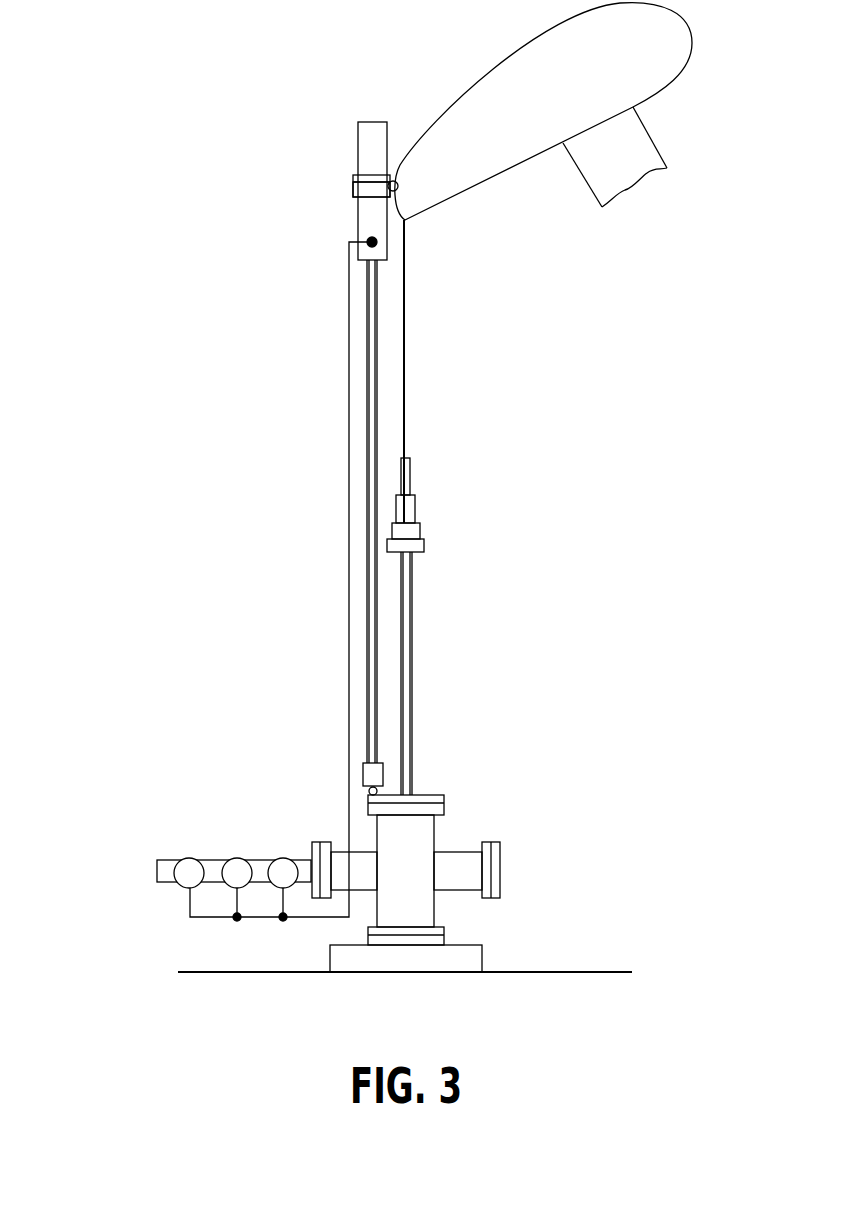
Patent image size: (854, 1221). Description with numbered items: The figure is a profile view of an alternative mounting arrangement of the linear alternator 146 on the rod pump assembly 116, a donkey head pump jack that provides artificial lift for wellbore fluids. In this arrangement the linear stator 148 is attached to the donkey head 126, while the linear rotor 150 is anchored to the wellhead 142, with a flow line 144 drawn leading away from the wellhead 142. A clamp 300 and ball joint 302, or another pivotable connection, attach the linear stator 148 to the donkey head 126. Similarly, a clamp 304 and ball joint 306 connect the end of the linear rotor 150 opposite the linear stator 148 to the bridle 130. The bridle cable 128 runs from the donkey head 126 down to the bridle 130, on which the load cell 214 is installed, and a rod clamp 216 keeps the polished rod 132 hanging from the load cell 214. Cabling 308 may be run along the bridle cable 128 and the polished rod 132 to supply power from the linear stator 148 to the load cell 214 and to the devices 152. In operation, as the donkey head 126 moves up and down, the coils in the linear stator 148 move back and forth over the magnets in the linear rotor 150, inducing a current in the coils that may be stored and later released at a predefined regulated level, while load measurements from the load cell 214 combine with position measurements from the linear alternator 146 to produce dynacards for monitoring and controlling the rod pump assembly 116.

The rod pump assembly 116 is at (98, 124).
The donkey head 126 is at (472, 72).
The bridle cable 128 is at (407, 335).
The bridle 130 is at (425, 548).
The polished rod 132 is at (413, 712).
The wellhead 142 is at (490, 821).
The flow line 144 is at (163, 881).
The linear alternator 146 is at (246, 262).
The linear stator 148 is at (358, 140).
The linear rotor 150 is at (367, 302).
The devices 152 is at (190, 858).
The load cell 214 is at (421, 530).
The rod clamp 216 is at (416, 505).
The clamp 300 is at (353, 193).
The ball joint 302 is at (353, 183).
The clamp 304 is at (363, 767).
The ball joint 306 is at (369, 791).
The cabling 308 is at (318, 920).